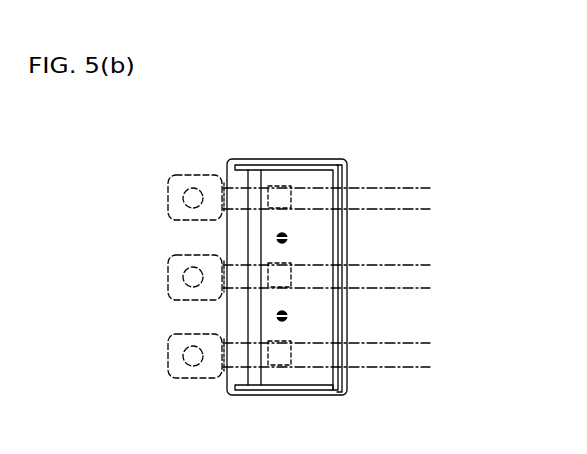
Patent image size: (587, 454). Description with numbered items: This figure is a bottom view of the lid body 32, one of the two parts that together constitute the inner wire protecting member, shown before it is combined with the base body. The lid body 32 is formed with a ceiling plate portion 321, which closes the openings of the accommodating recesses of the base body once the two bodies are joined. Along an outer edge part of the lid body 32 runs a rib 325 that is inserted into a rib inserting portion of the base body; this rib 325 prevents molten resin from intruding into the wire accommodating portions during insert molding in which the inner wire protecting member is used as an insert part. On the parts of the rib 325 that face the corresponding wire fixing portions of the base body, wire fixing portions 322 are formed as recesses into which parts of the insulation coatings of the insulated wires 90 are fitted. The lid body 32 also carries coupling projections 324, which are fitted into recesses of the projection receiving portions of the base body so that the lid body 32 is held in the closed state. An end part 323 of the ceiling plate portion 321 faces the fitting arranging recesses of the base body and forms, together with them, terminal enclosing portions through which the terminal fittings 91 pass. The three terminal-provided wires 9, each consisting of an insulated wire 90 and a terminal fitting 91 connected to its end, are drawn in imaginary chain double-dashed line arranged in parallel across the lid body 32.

The lid body 32 is at (389, 160).
The ceiling plate portion 321 is at (303, 258).
The wire fixing portions 322 is at (338, 360).
The end part 323 is at (231, 258).
The coupling projections 324 is at (280, 321).
The rib 325 is at (308, 387).
The terminal-provided wire 9 is at (445, 362).
The insulated wire 90 is at (392, 367).
The terminal fitting 91 is at (172, 380).